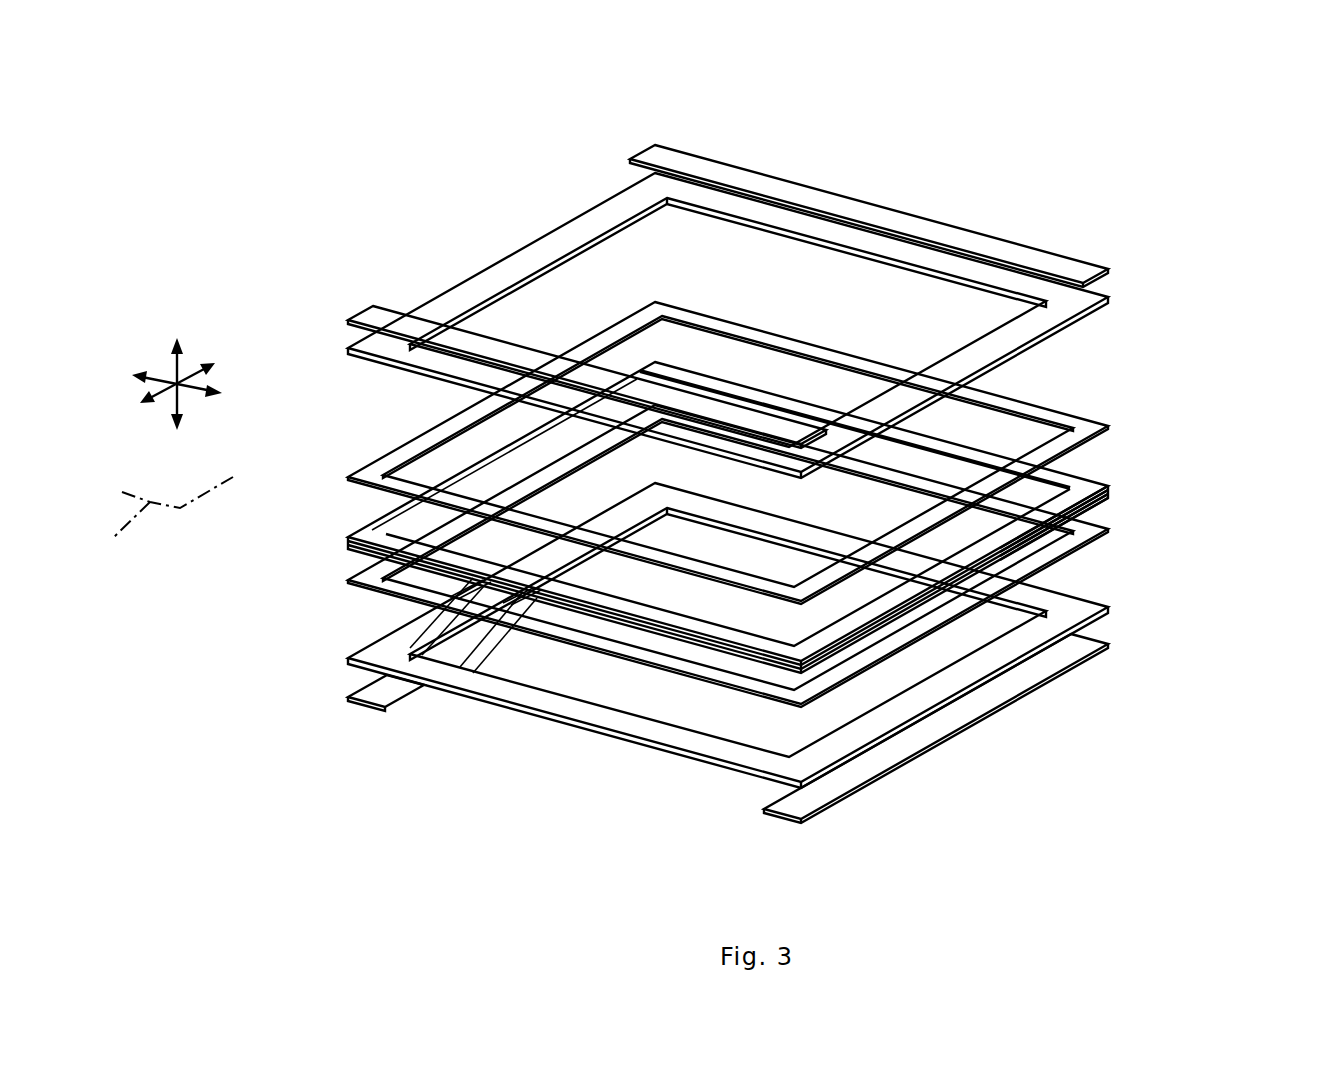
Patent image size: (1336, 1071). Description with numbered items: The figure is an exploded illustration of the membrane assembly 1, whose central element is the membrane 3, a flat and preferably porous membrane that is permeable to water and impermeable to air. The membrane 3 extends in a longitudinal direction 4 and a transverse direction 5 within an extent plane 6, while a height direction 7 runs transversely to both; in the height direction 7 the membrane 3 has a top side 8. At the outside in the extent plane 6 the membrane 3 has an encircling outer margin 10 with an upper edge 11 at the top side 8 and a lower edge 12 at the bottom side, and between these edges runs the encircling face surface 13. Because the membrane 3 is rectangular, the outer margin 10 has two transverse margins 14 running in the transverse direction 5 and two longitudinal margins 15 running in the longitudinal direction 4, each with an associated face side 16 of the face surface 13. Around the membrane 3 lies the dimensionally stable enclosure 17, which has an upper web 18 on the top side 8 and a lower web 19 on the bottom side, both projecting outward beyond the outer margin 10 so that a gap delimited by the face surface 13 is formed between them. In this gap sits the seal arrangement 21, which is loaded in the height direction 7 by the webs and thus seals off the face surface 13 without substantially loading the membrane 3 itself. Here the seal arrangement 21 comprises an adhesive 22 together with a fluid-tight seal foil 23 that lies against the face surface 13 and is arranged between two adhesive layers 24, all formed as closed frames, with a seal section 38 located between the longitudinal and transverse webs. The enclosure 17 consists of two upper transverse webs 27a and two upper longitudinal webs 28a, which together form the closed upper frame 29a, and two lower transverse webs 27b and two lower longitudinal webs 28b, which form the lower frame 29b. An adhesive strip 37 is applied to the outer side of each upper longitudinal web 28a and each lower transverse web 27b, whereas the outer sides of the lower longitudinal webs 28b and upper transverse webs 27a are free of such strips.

The membrane assembly 1 is at (713, 468).
The membrane 3 is at (729, 496).
The longitudinal direction 4 is at (158, 378).
The transverse direction 5 is at (193, 370).
The extent plane 6 is at (122, 530).
The height direction 7 is at (175, 365).
The top side 8 is at (729, 496).
The outer margin 10 is at (1087, 461).
The upper edge 11 is at (1075, 480).
The lower edge 12 is at (1108, 490).
The face surface 13 is at (1112, 500).
The transverse margin 14 is at (693, 517).
The longitudinal margin 15 is at (822, 400).
The face side 16 is at (767, 387).
The enclosure 17 is at (777, 482).
The upper web 18 is at (770, 300).
The lower web 19 is at (707, 624).
The seal arrangement 21 is at (804, 583).
The adhesive 22 is at (670, 504).
The seal foil 23 is at (365, 520).
The adhesive layer 24 is at (365, 460).
The upper transverse web 27a is at (480, 290).
The lower transverse web 27b is at (430, 615).
The upper longitudinal web 28a is at (760, 210).
The lower longitudinal web 28b is at (965, 580).
The upper frame 29a is at (797, 300).
The lower frame 29b is at (761, 624).
The adhesive strip 37 is at (650, 160).
The seal section 38 is at (833, 450).